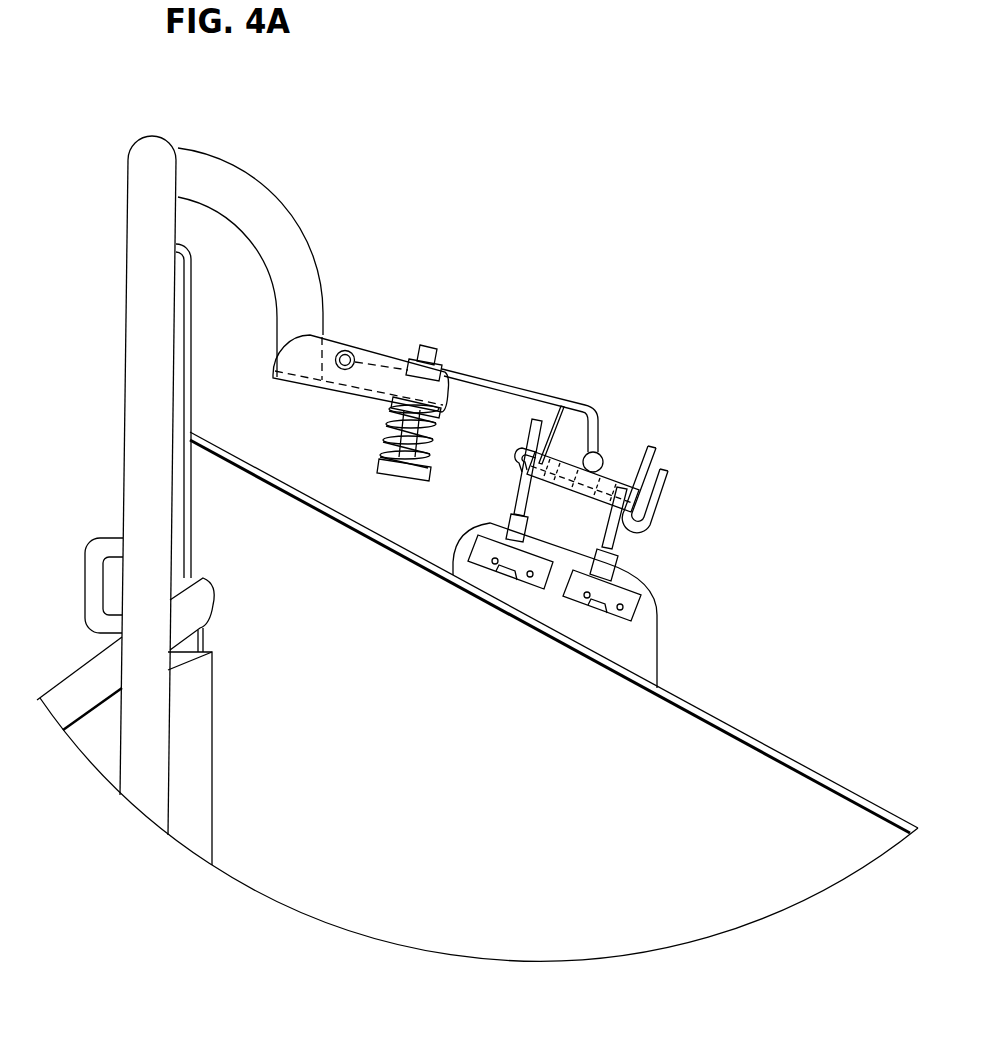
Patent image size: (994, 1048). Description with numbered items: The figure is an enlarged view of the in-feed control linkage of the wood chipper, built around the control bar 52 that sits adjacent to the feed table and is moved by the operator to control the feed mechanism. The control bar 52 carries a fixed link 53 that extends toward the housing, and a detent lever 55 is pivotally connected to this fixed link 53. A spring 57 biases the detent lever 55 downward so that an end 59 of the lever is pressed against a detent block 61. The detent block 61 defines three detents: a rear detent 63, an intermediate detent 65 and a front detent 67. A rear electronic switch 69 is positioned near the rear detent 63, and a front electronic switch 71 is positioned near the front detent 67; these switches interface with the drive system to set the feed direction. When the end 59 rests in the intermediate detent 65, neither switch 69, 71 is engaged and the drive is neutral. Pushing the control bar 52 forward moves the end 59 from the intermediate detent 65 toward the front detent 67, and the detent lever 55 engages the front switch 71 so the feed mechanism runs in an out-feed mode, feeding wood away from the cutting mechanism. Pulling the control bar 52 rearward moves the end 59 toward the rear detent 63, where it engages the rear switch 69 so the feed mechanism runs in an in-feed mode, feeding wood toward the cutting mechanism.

The control bar 52 is at (127, 257).
The fixed link 53 is at (252, 172).
The detent lever 55 is at (476, 378).
The spring 57 is at (388, 438).
The end 59 is at (603, 451).
The detent block 61 is at (614, 464).
The rear detent 63 is at (540, 450).
The intermediate detent 65 is at (590, 477).
The front detent 67 is at (618, 482).
The rear electronic switch 69 is at (488, 566).
The front electronic switch 71 is at (622, 623).